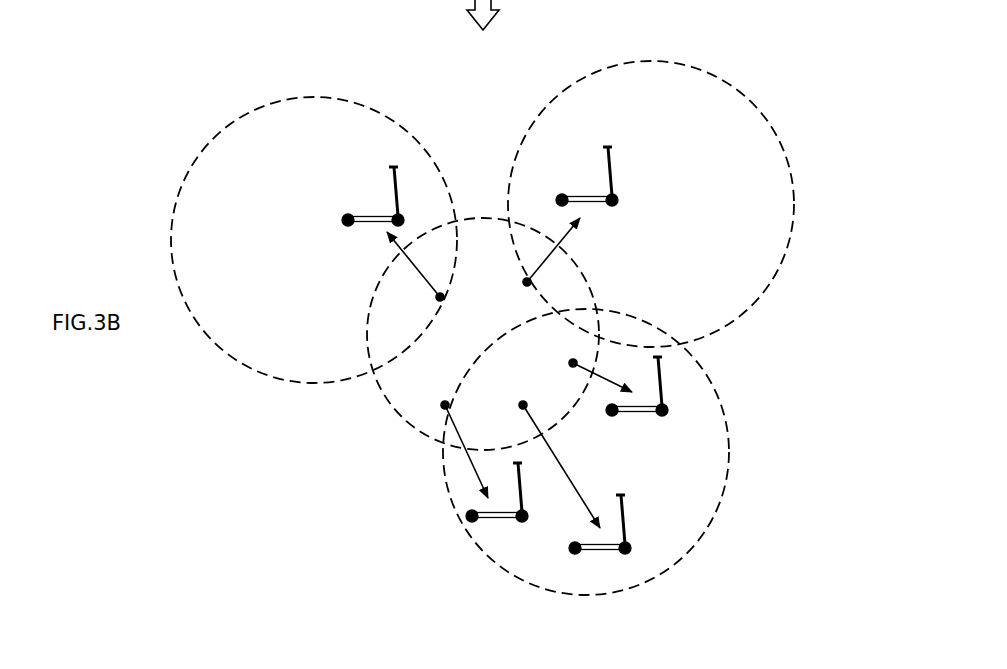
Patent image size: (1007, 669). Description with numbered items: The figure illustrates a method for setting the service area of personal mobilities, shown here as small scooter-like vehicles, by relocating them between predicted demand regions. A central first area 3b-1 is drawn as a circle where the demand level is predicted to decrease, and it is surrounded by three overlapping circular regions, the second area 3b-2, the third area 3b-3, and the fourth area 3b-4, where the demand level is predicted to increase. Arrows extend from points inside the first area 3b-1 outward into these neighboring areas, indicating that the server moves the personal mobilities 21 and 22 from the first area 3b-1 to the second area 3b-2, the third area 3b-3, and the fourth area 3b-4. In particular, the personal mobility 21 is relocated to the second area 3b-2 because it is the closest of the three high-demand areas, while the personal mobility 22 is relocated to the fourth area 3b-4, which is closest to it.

The first area 3b-1 is at (407, 402).
The second area 3b-2 is at (282, 110).
The third area 3b-3 is at (697, 82).
The fourth area 3b-4 is at (553, 580).
The personal mobility 21 is at (397, 200).
The personal mobility 22 is at (495, 522).